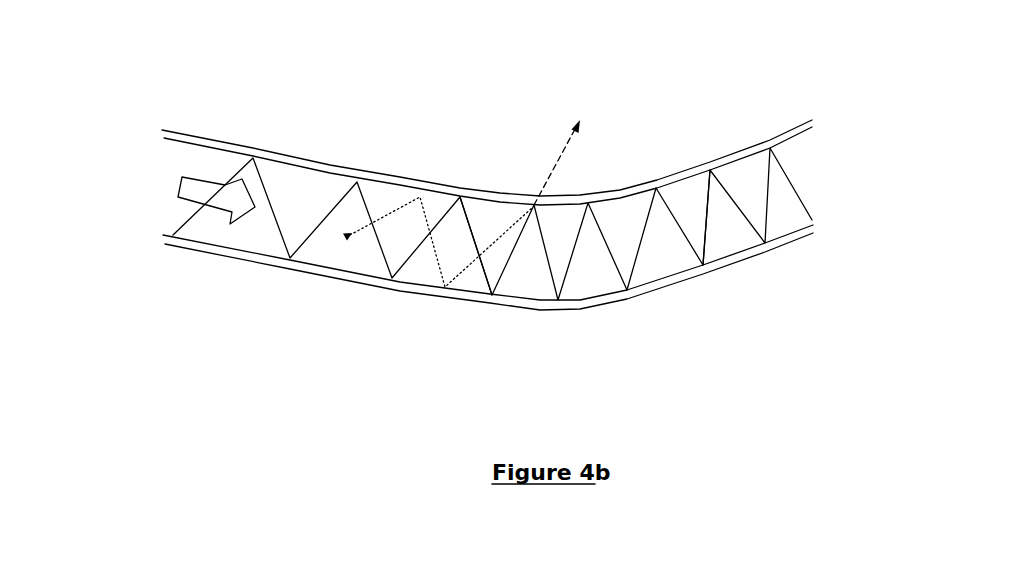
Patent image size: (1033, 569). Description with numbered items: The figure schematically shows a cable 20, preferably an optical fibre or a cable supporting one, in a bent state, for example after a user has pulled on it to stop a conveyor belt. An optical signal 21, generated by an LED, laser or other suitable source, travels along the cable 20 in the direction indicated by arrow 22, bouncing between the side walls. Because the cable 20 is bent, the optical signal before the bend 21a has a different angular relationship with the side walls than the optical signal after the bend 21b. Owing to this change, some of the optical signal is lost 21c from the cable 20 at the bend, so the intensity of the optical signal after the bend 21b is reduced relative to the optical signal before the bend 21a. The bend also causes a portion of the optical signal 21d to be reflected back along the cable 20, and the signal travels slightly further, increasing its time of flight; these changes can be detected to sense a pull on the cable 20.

The cable 20 is at (675, 172).
The optical signal 21 is at (263, 178).
The optical signal before the bend 21a is at (480, 282).
The optical signal after the bend 21b is at (708, 245).
The lost optical signal 21c is at (558, 157).
The reflected portion of the optical signal 21d is at (362, 232).
The arrow 22 is at (177, 192).